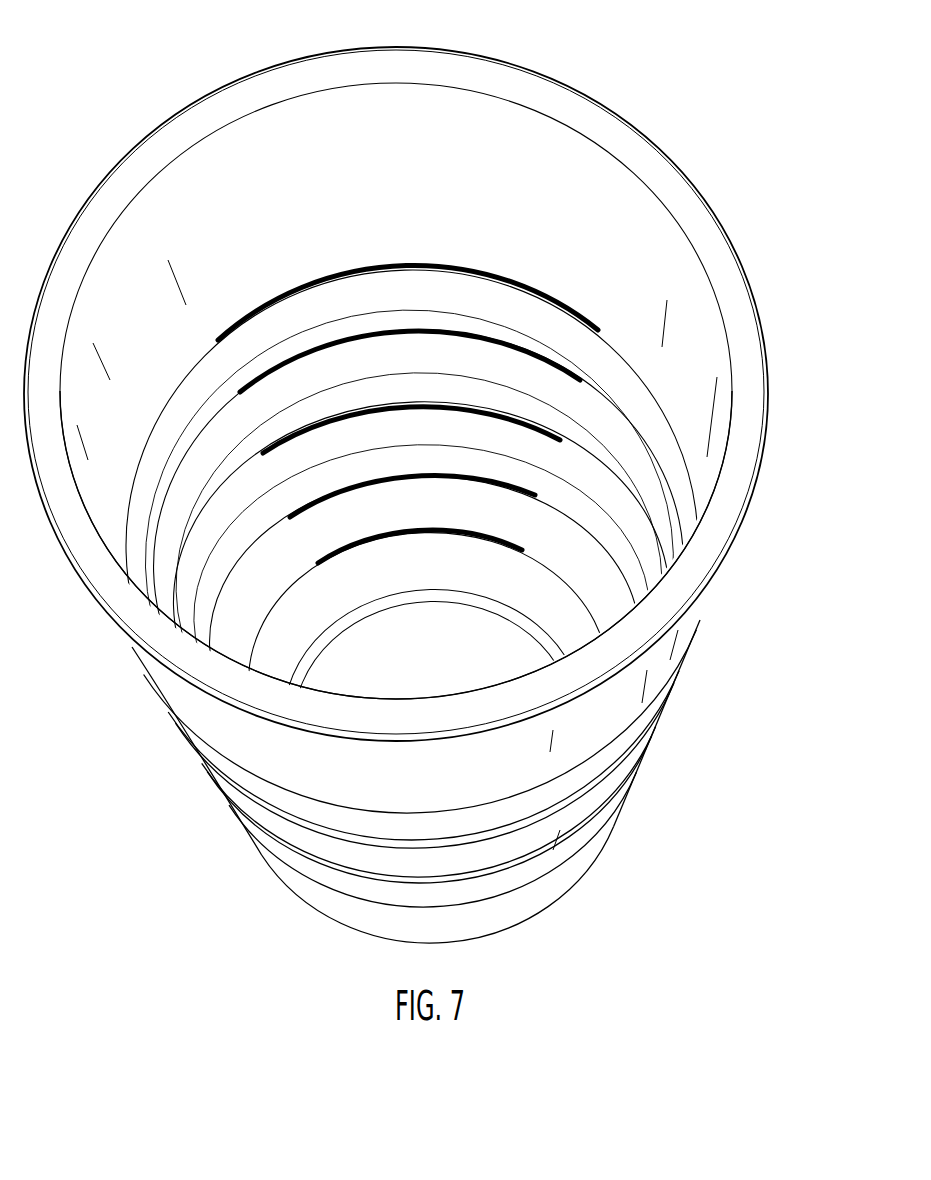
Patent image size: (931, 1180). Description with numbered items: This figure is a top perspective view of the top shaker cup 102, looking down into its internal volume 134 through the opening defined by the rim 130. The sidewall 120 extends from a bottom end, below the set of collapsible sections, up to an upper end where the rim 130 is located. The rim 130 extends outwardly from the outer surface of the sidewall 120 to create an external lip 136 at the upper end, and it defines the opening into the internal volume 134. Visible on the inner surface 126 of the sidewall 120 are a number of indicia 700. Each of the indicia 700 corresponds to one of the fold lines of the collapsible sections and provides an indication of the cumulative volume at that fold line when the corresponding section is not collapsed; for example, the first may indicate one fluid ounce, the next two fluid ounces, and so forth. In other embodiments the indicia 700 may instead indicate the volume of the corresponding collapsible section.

The top shaker cup 102 is at (640, 757).
The sidewall 120 is at (177, 727).
The inner surface 126 is at (233, 168).
The rim 130 is at (767, 437).
The internal volume 134 is at (122, 278).
The external lip 136 is at (730, 263).
The indicia 700 is at (455, 270).